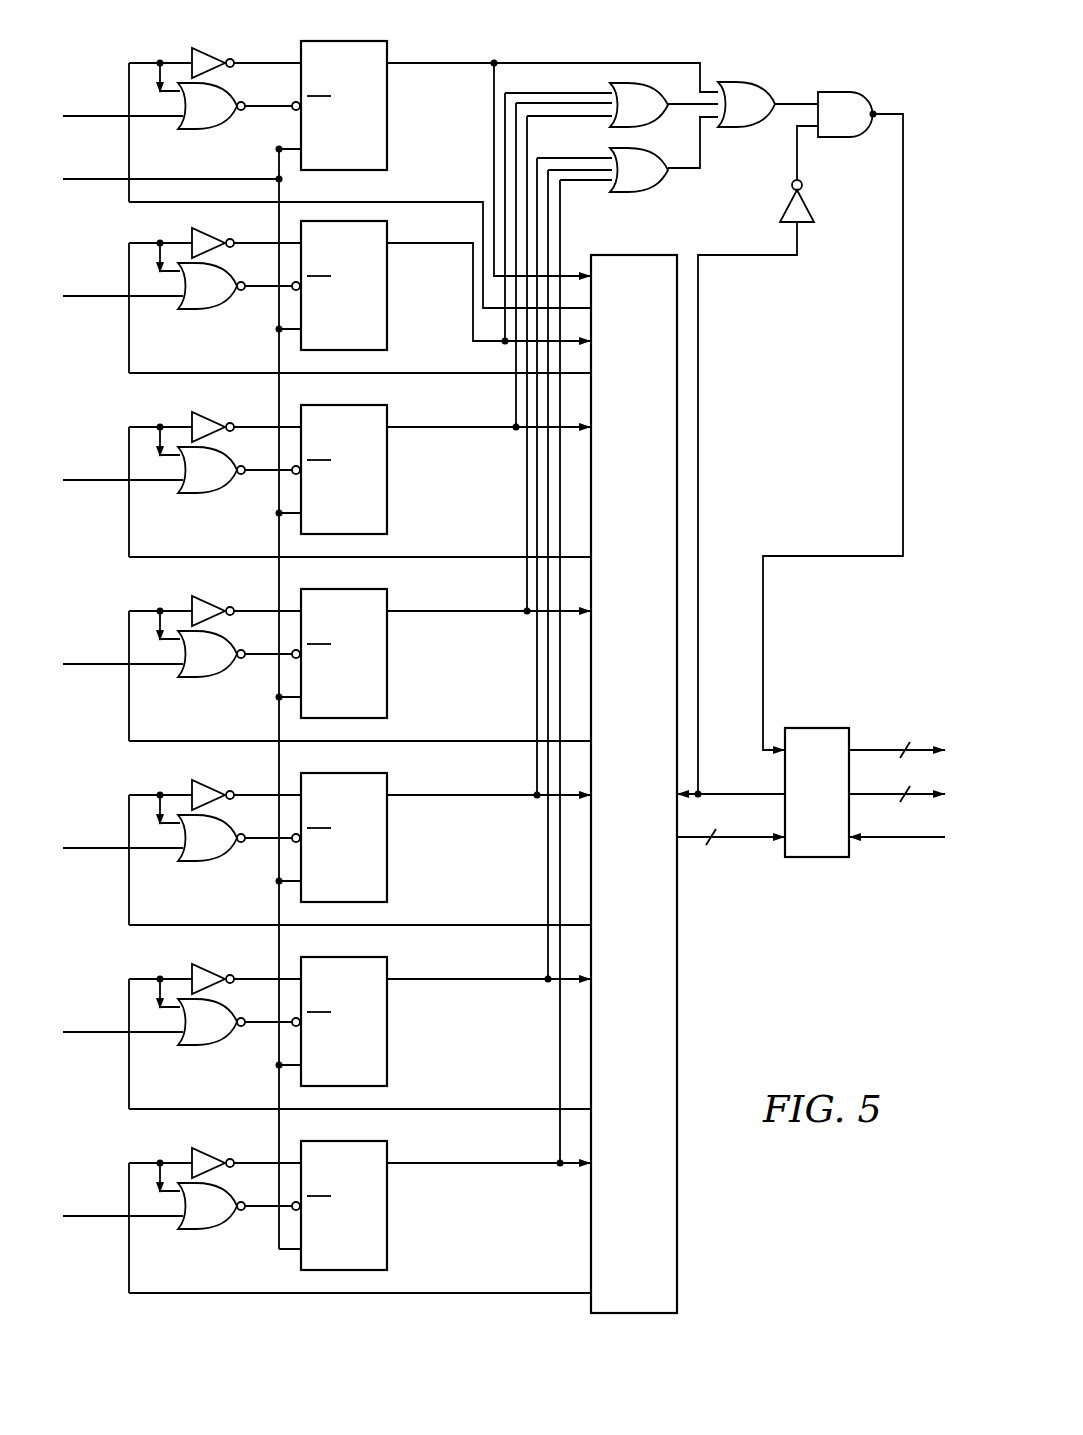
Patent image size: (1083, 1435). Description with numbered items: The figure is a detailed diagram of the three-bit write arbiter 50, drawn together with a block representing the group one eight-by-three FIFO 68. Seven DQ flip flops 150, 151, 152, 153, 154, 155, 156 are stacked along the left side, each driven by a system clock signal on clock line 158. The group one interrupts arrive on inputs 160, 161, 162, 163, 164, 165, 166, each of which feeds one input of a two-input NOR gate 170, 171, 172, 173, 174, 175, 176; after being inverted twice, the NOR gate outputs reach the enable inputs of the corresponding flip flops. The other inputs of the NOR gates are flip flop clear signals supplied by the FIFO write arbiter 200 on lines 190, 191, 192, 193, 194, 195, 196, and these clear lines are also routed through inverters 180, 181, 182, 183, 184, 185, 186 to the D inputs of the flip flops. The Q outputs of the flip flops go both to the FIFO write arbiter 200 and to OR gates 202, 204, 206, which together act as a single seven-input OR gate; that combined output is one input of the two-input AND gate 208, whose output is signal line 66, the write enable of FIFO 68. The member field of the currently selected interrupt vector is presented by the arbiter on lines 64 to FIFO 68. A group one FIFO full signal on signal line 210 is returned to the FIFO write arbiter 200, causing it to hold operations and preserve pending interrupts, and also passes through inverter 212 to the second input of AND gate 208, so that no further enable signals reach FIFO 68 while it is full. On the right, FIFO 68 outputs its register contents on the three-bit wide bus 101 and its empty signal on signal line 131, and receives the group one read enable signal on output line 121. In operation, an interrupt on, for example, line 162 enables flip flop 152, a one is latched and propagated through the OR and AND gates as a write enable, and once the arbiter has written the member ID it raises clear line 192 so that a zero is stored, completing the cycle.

The 3-bit write arbiter 50 is at (755, 985).
The lines 64 is at (735, 838).
The signal line 66 is at (903, 364).
The group 1 8×3 FIFO 68 is at (815, 728).
The 3-bit wide bus 101 is at (870, 796).
The output line 121 is at (905, 838).
The signal line 131 is at (870, 750).
The DQ flip flop 150 is at (387, 94).
The DQ flip flop 151 is at (387, 274).
The DQ flip flop 152 is at (387, 458).
The DQ flip flop 153 is at (387, 642).
The DQ flip flop 154 is at (387, 826).
The DQ flip flop 155 is at (387, 1010).
The DQ flip flop 156 is at (387, 1194).
The clock line 158 is at (95, 181).
The input 160 is at (93, 116).
The input 161 is at (93, 296).
The input 162 is at (93, 480).
The input 163 is at (93, 664).
The input 164 is at (93, 848).
The input 165 is at (93, 1032).
The input 166 is at (93, 1216).
The 2-input NOR gate 170 is at (212, 129).
The 2-input NOR gate 171 is at (212, 309).
The 2-input NOR gate 172 is at (212, 493).
The 2-input NOR gate 173 is at (212, 677).
The 2-input NOR gate 174 is at (212, 861).
The 2-input NOR gate 175 is at (212, 1045).
The 2-input NOR gate 176 is at (212, 1229).
The inverter 180 is at (192, 52).
The inverter 181 is at (192, 232).
The inverter 182 is at (192, 416).
The inverter 183 is at (192, 600).
The inverter 184 is at (192, 784).
The inverter 185 is at (192, 968).
The inverter 186 is at (192, 1152).
The flip flop clear line 190 is at (430, 200).
The flip flop clear line 191 is at (430, 371).
The flip flop clear line 192 is at (430, 555).
The flip flop clear line 193 is at (430, 739).
The flip flop clear line 194 is at (430, 923).
The flip flop clear line 195 is at (430, 1107).
The flip flop clear line 196 is at (430, 1291).
The FIFO write arbiter 200 is at (655, 816).
The OR gate 202 is at (745, 82).
The OR gate 204 is at (610, 86).
The OR gate 206 is at (610, 151).
The 2-input AND gate 208 is at (840, 92).
The signal line 210 is at (720, 794).
The inverter 212 is at (782, 208).